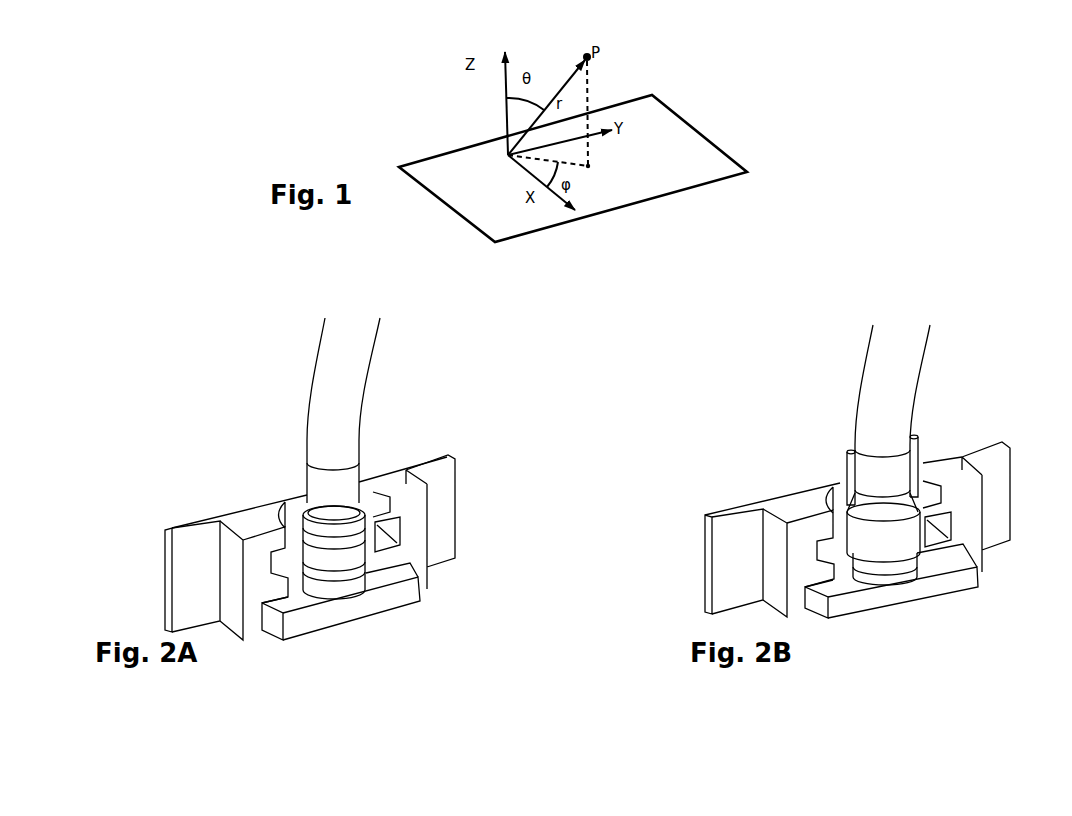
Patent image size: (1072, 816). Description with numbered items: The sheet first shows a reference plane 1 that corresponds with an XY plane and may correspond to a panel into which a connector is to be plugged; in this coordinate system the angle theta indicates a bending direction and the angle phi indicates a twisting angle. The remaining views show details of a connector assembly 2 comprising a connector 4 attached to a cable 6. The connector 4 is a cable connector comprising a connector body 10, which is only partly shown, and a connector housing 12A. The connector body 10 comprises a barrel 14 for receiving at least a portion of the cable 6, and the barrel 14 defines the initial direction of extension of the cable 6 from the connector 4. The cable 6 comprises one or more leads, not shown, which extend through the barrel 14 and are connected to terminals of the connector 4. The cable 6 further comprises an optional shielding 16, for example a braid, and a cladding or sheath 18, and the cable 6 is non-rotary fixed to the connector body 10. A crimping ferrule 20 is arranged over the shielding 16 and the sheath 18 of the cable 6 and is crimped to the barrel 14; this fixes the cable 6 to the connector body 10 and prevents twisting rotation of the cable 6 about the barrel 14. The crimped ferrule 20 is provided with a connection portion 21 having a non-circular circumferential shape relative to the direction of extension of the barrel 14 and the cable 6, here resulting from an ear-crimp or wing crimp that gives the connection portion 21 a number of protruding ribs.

In FIG. 1, the reference plane 1 is at (710, 173).
In FIG. 2A, the connector assembly 2 is at (195, 440).
In FIG. 2B, the connector assembly 2 is at (787, 427).
In FIG. 2A, the connector 4 is at (271, 547).
In FIG. 2A, the cable 6 is at (312, 428).
In FIG. 2B, the cable 6 is at (878, 413).
In FIG. 2A, the connector body 10 is at (407, 603).
In FIG. 2B, the connector body 10 is at (930, 583).
In FIG. 2A, the connector housing 12A is at (183, 583).
In FIG. 2B, the connector housing 12A is at (997, 540).
In FIG. 2A, the barrel 14 is at (343, 578).
In FIG. 2A, the shielding 16 is at (352, 512).
In FIG. 2A, the sheath 18 is at (316, 480).
In FIG. 2B, the crimping ferrule 20 is at (892, 540).
In FIG. 2B, the connection portion 21 is at (847, 472).